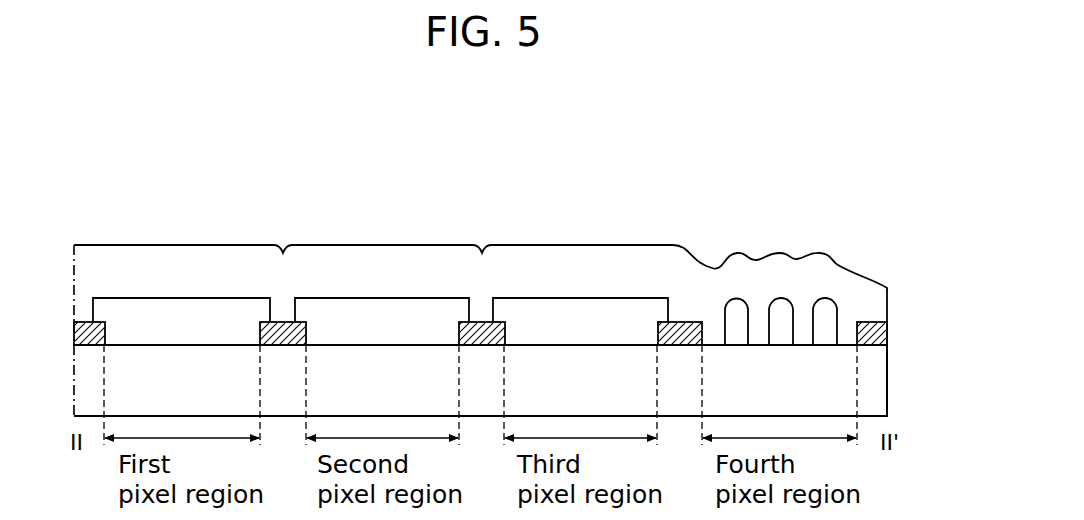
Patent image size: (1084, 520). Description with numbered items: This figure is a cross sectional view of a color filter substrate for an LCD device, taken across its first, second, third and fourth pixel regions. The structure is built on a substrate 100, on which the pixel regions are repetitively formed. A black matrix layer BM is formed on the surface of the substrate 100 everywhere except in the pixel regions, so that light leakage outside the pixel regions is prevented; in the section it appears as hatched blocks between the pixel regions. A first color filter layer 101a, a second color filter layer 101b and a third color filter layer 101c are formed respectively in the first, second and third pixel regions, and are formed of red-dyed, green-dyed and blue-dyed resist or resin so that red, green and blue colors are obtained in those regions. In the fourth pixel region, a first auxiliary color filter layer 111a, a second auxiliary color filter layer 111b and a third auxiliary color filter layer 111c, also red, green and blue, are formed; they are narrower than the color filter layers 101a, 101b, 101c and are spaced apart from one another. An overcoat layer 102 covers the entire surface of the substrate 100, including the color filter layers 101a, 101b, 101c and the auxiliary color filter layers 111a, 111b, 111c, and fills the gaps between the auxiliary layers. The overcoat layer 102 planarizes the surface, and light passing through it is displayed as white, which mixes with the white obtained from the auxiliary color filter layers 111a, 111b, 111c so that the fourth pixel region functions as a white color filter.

The substrate 100 is at (887, 389).
The overcoat layer 102 is at (887, 305).
The black matrix layer BM is at (880, 334).
The first color filter layer 101a is at (187, 300).
The second color filter layer 101b is at (387, 300).
The third color filter layer 101c is at (585, 300).
The first auxiliary color filter layer 111a is at (730, 300).
The second auxiliary color filter layer 111b is at (780, 300).
The third auxiliary color filter layer 111c is at (823, 300).